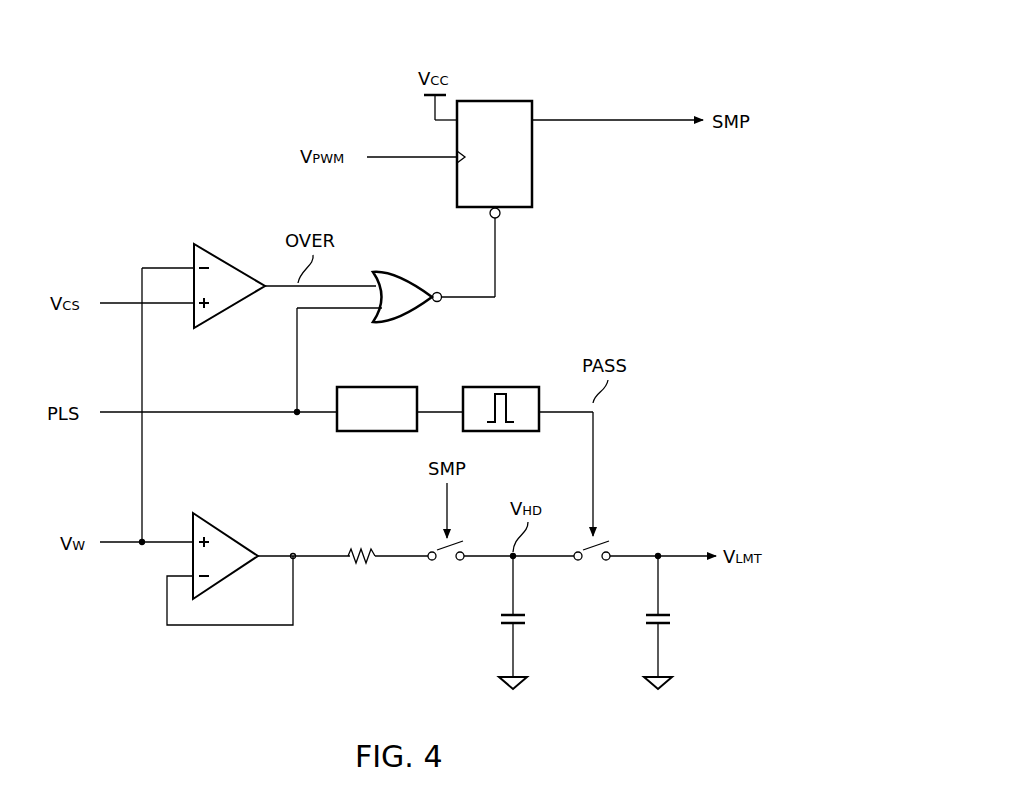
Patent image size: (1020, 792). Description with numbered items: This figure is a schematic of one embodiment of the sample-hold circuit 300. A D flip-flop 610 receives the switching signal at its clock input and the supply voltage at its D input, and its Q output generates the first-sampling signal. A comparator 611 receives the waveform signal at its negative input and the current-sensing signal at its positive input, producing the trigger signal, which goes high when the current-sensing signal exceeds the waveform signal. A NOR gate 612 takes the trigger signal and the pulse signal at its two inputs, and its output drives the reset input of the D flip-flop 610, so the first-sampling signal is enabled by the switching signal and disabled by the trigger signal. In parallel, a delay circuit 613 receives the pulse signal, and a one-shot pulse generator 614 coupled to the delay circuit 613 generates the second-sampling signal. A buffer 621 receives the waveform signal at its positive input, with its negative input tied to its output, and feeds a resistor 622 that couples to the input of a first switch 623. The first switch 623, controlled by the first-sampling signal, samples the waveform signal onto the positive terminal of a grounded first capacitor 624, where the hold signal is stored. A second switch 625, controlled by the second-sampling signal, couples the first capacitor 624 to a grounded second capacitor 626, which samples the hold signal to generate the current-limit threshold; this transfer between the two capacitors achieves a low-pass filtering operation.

The sample-hold circuit 300 is at (803, 66).
The D flip-flop 610 is at (494, 144).
The comparator 611 is at (229, 284).
The NOR gate 612 is at (407, 283).
The delay circuit 613 is at (377, 396).
The one-shot pulse generator 614 is at (501, 396).
The buffer 621 is at (231, 568).
The resistor 622 is at (362, 543).
The first switch 623 is at (446, 563).
The first capacitor 624 is at (530, 622).
The second switch 625 is at (591, 563).
The second capacitor 626 is at (675, 622).